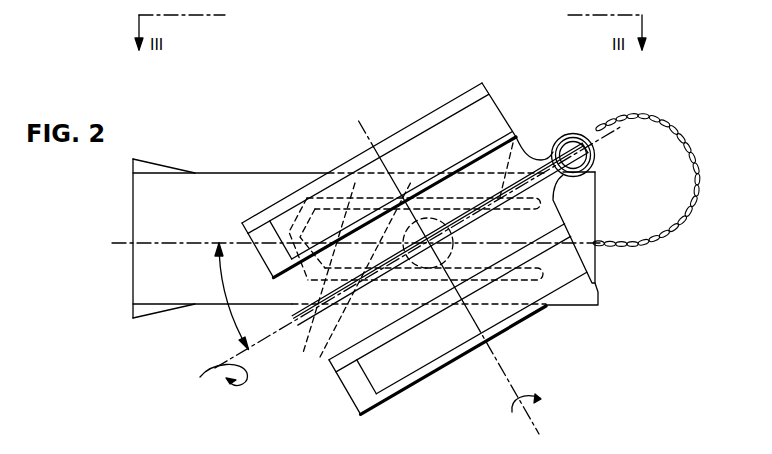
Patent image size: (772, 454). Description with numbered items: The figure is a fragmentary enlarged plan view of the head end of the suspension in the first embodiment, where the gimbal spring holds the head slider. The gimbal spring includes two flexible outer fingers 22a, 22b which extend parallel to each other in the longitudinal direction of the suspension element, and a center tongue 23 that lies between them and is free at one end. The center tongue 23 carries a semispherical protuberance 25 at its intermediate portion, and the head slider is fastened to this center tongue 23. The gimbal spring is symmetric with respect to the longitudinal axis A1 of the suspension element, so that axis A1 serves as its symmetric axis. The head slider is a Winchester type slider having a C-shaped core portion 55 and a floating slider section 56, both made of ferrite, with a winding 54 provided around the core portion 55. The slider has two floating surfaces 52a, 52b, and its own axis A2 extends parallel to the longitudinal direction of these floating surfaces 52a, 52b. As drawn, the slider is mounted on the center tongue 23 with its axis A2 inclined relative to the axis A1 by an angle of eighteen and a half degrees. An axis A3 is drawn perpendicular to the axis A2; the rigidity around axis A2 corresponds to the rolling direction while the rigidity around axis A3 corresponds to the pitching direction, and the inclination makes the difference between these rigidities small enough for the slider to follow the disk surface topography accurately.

The flexible outer finger 22a is at (355, 183).
The flexible outer finger 22b is at (320, 357).
The center tongue 23 is at (303, 335).
The semispherical protuberance 25 is at (420, 210).
The floating surface 52a is at (438, 130).
The floating surface 52b is at (428, 343).
The winding 54 is at (597, 157).
The C-shaped core portion 55 is at (573, 134).
The floating slider section 56 is at (472, 84).
The longitudinal axis A1 is at (343, 234).
The axis A2 is at (200, 377).
The axis A3 is at (540, 417).